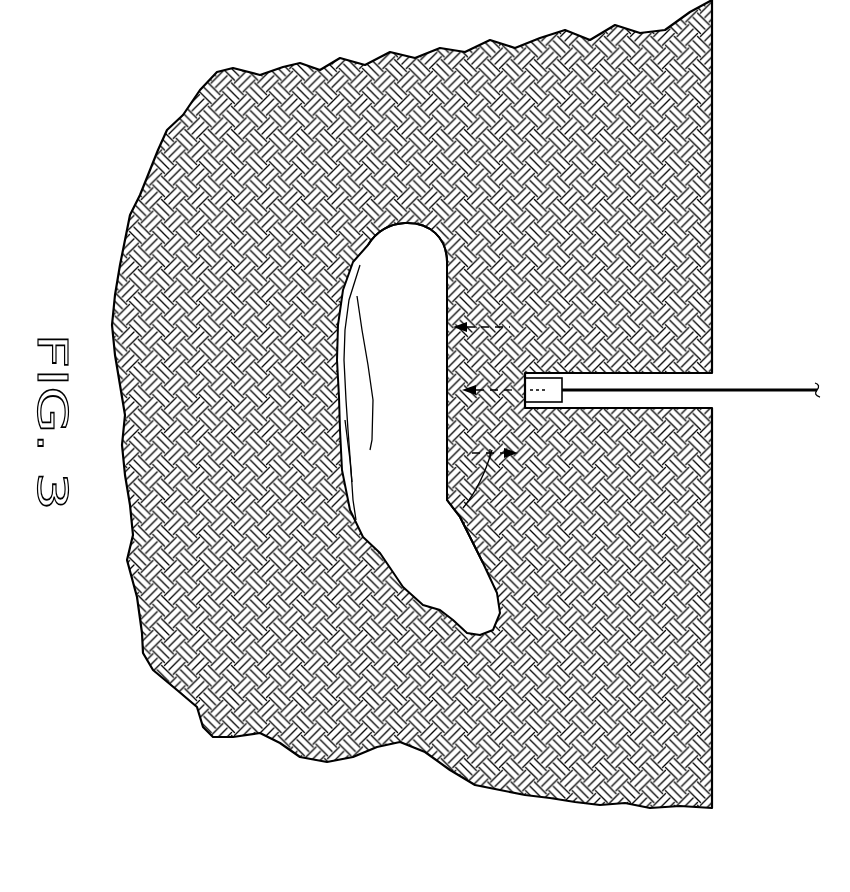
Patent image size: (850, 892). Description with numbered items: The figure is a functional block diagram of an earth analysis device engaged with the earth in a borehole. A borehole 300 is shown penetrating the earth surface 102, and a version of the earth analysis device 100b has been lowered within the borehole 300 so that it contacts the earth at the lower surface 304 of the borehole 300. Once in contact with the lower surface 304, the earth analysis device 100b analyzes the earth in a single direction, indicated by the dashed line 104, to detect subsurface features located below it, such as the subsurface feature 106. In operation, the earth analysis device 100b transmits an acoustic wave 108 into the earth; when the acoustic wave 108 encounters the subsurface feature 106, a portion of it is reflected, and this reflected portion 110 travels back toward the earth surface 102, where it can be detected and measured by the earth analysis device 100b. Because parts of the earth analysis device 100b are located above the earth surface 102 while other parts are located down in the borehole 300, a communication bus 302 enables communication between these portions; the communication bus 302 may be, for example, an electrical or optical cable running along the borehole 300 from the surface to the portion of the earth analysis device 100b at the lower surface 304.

The earth analysis device 100b is at (523, 405).
The earth surface 102 is at (713, 128).
The dashed line 104 is at (445, 361).
The subsurface feature 106 is at (367, 277).
The acoustic wave 108 is at (440, 281).
The reflected portion 110 is at (446, 510).
The borehole 300 is at (614, 436).
The communication bus 302 is at (775, 392).
The lower surface 304 is at (527, 400).